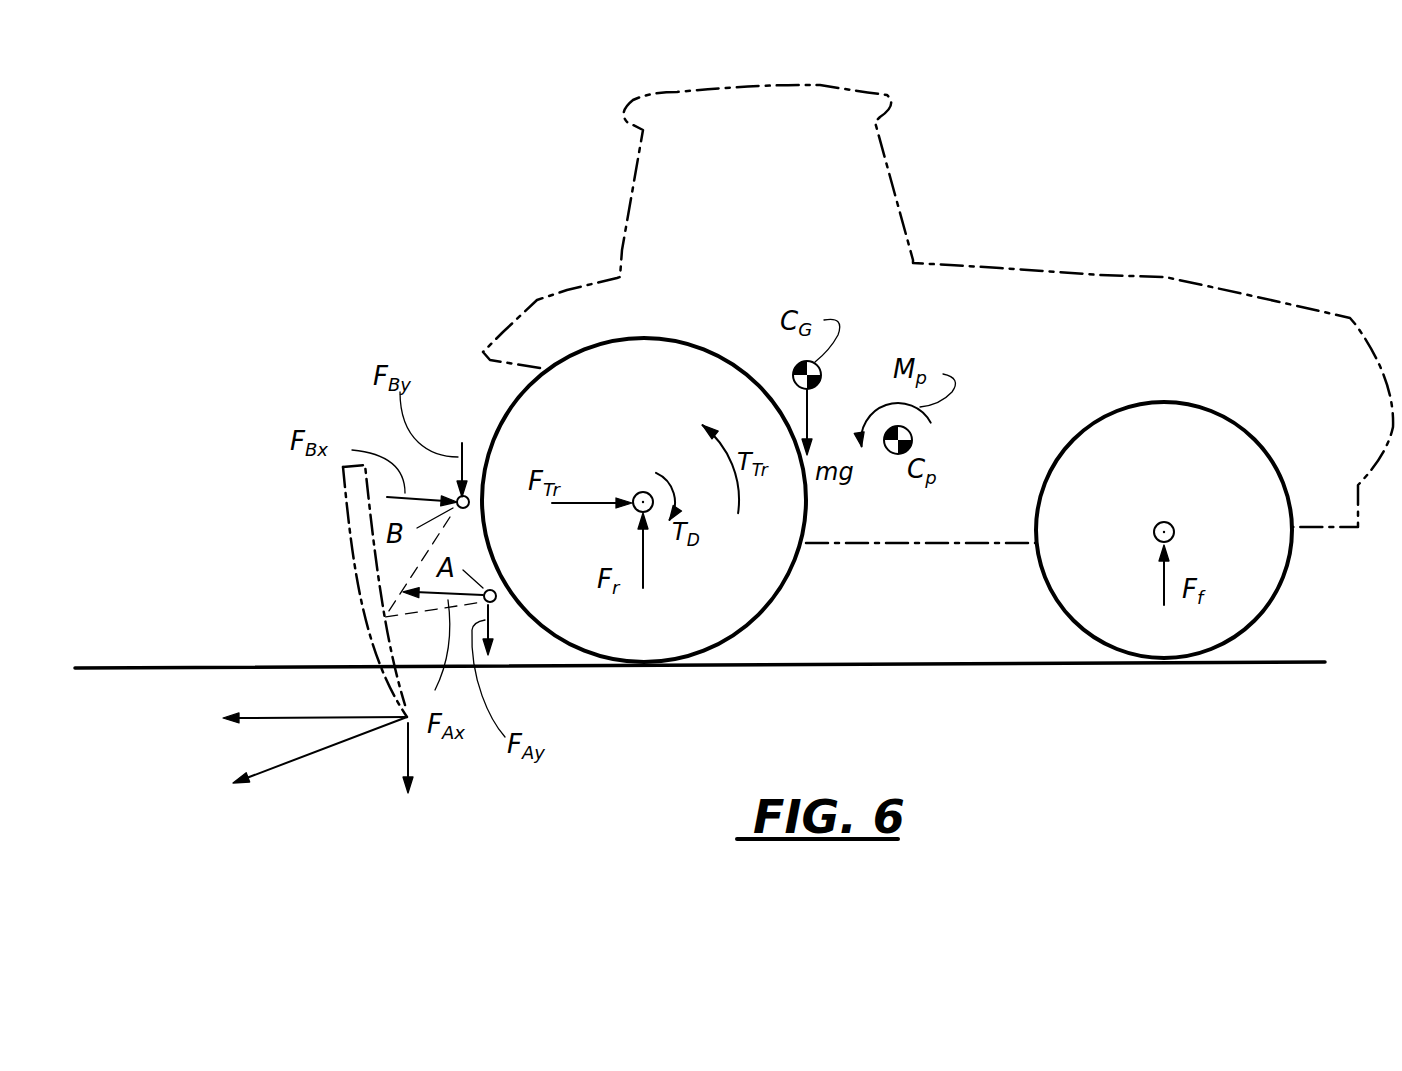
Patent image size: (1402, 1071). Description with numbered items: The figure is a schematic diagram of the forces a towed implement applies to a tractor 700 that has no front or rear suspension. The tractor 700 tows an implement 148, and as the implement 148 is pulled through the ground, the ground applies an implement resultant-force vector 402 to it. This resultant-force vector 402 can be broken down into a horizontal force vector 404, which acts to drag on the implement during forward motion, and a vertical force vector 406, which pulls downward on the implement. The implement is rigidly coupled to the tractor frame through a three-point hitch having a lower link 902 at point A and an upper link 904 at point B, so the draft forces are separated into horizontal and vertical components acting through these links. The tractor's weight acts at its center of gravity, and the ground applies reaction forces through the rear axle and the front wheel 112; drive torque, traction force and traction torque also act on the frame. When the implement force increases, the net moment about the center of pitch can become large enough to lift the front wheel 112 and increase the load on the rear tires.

The tractor 700 is at (1080, 247).
The front wheel 112 is at (1188, 358).
The upper link 904 is at (474, 490).
The lower link 902 is at (510, 614).
The implement 148 is at (330, 516).
The horizontal force vector 404 is at (268, 717).
The implement resultant-force vector 402 is at (295, 770).
The vertical force vector 406 is at (402, 748).